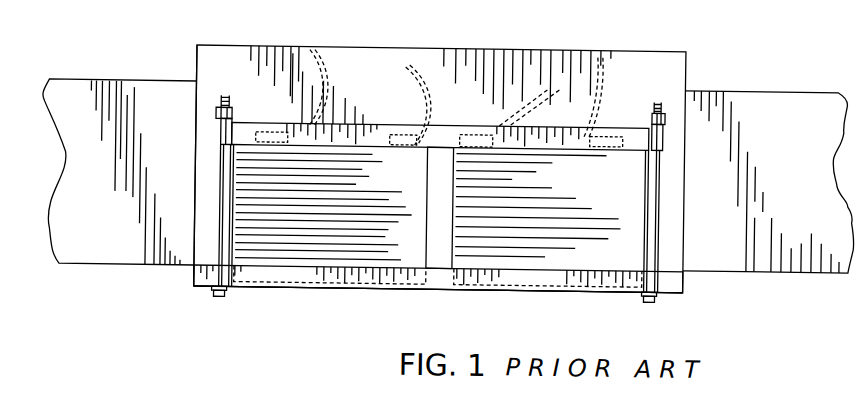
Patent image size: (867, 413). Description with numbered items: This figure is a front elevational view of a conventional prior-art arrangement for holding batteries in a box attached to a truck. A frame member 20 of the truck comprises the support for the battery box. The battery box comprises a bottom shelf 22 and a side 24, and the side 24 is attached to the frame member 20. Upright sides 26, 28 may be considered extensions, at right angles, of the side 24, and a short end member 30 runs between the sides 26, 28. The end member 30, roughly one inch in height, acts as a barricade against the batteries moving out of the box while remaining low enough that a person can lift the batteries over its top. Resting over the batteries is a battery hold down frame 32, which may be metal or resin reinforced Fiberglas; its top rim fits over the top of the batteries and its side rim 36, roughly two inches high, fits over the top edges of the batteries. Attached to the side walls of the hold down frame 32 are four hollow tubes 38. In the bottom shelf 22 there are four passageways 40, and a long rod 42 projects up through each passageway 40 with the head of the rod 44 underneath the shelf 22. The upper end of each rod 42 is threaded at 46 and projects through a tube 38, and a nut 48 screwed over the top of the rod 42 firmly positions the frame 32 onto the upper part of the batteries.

The frame member 20 is at (134, 91).
The bottom shelf 22 is at (416, 284).
The side 24 is at (397, 50).
The upright side 26 is at (196, 110).
The upright side 28 is at (687, 178).
The end member 30 is at (523, 278).
The battery hold down frame 32 is at (265, 126).
The side rim 36 is at (419, 150).
The hollow tube 38 is at (219, 130).
The passageway 40 is at (223, 291).
The long rod 42 is at (222, 193).
The head of the rod 44 is at (231, 292).
The threaded upper end 46 is at (248, 69).
The nut 48 is at (218, 113).